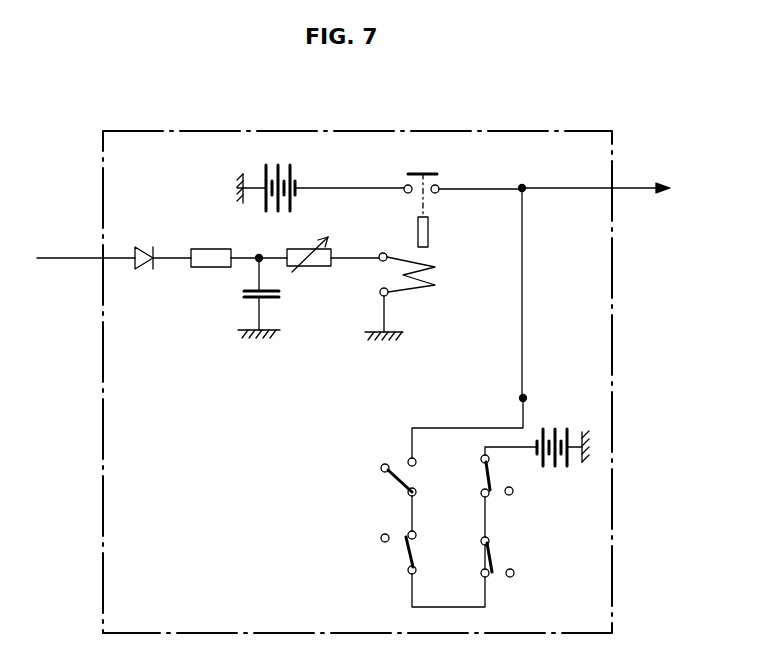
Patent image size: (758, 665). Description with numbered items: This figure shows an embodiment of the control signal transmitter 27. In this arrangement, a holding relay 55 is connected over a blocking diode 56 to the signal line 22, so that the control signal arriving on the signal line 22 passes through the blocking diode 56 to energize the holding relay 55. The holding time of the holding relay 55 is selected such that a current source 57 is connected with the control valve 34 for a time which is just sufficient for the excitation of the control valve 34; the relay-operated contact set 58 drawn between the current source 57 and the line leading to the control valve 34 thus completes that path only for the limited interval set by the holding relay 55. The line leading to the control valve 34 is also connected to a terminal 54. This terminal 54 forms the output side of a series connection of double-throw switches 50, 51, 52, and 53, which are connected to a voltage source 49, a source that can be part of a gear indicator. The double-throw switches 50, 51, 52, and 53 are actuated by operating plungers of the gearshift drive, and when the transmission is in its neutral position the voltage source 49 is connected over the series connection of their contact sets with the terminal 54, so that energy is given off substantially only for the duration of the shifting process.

The signal line 22 is at (67, 258).
The control signal transmitter 27 is at (612, 331).
The control valve 34 is at (613, 189).
The voltage source 49 is at (546, 468).
The double-throw switch 50 is at (497, 494).
The double-throw switch 51 is at (502, 575).
The double-throw switch 52 is at (398, 540).
The double-throw switch 53 is at (402, 482).
The terminal 54 is at (520, 398).
The holding relay 55 is at (473, 326).
The blocking diode 56 is at (149, 247).
The current source 57 is at (293, 172).
The relay switch 58 is at (433, 182).